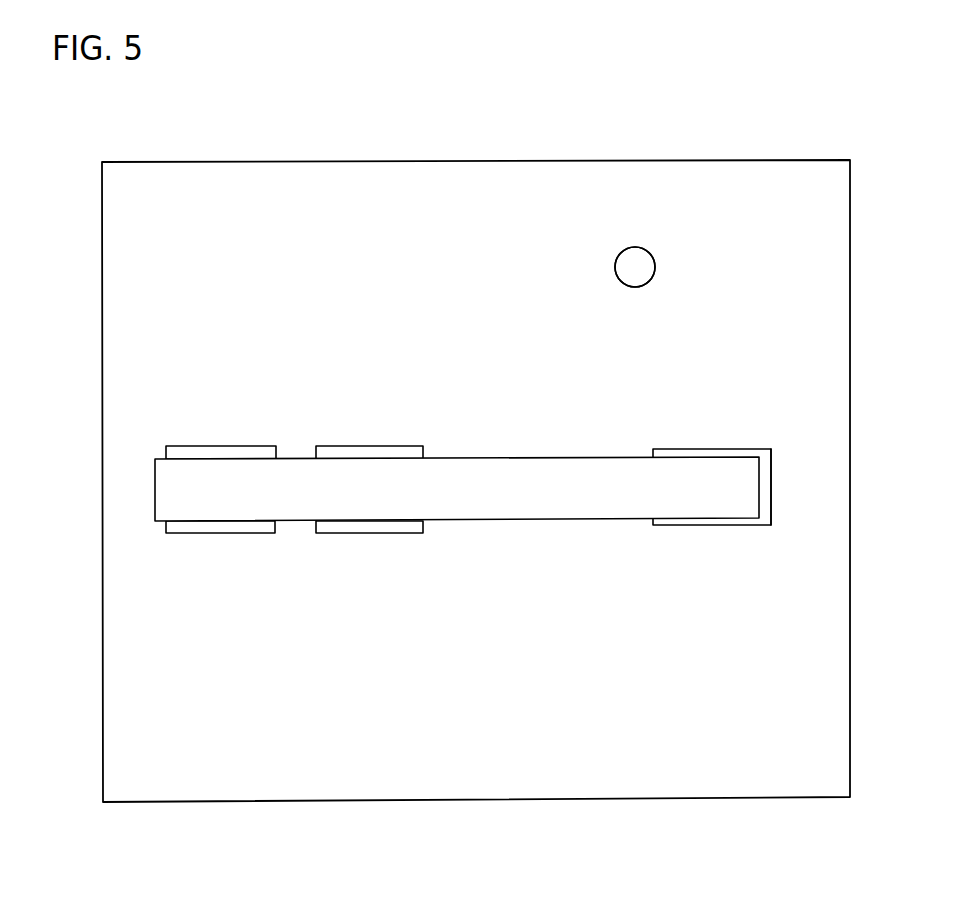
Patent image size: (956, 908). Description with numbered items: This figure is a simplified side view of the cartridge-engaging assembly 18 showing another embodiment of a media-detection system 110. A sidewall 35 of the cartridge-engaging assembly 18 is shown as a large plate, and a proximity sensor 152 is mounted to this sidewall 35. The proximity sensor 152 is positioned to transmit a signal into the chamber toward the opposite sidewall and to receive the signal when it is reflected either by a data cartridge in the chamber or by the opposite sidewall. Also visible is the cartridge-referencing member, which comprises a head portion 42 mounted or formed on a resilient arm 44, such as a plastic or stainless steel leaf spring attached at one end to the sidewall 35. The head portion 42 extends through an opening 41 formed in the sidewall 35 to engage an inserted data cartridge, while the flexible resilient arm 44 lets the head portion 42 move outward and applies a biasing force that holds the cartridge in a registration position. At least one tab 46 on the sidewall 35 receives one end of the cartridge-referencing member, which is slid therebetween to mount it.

The cartridge-engaging assembly 18 is at (344, 148).
The sidewall 35 is at (225, 802).
The media-detection system 110 is at (608, 236).
The proximity sensor 152 is at (613, 277).
The head portion 42 is at (718, 457).
The tab 46 is at (385, 446).
The resilient arm 44 is at (558, 518).
The opening 41 is at (771, 515).